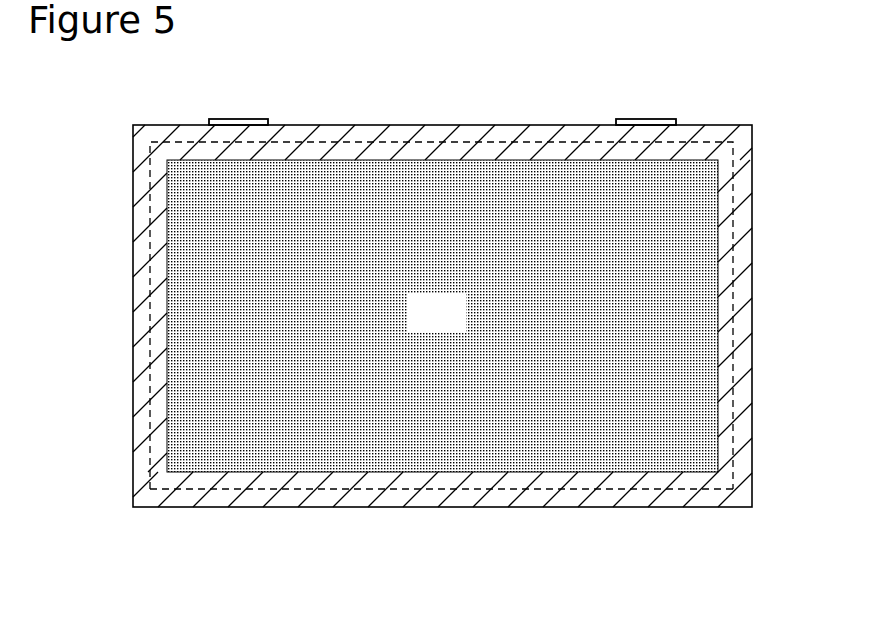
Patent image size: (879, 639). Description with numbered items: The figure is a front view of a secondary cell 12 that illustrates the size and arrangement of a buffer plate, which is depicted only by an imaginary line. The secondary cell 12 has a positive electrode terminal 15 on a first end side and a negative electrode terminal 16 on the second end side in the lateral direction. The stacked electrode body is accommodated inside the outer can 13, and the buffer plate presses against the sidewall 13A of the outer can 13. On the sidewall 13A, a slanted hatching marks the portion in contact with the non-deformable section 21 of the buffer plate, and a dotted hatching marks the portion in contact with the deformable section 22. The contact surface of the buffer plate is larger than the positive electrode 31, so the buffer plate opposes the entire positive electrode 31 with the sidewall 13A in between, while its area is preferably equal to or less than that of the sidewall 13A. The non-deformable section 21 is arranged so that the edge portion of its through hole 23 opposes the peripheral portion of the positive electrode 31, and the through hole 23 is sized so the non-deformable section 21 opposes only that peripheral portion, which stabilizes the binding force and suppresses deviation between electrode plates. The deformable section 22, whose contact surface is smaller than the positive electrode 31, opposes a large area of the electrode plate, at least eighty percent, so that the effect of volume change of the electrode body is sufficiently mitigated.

The secondary cell 12 is at (707, 85).
The outer can 13 is at (456, 125).
The sidewall 13A is at (418, 325).
The positive electrode terminal 15 is at (241, 119).
The negative electrode terminal 16 is at (647, 119).
The non-deformable section 21 is at (558, 488).
The deformable section 22 is at (623, 462).
The through hole 23 is at (715, 445).
The positive electrode 31 is at (429, 489).